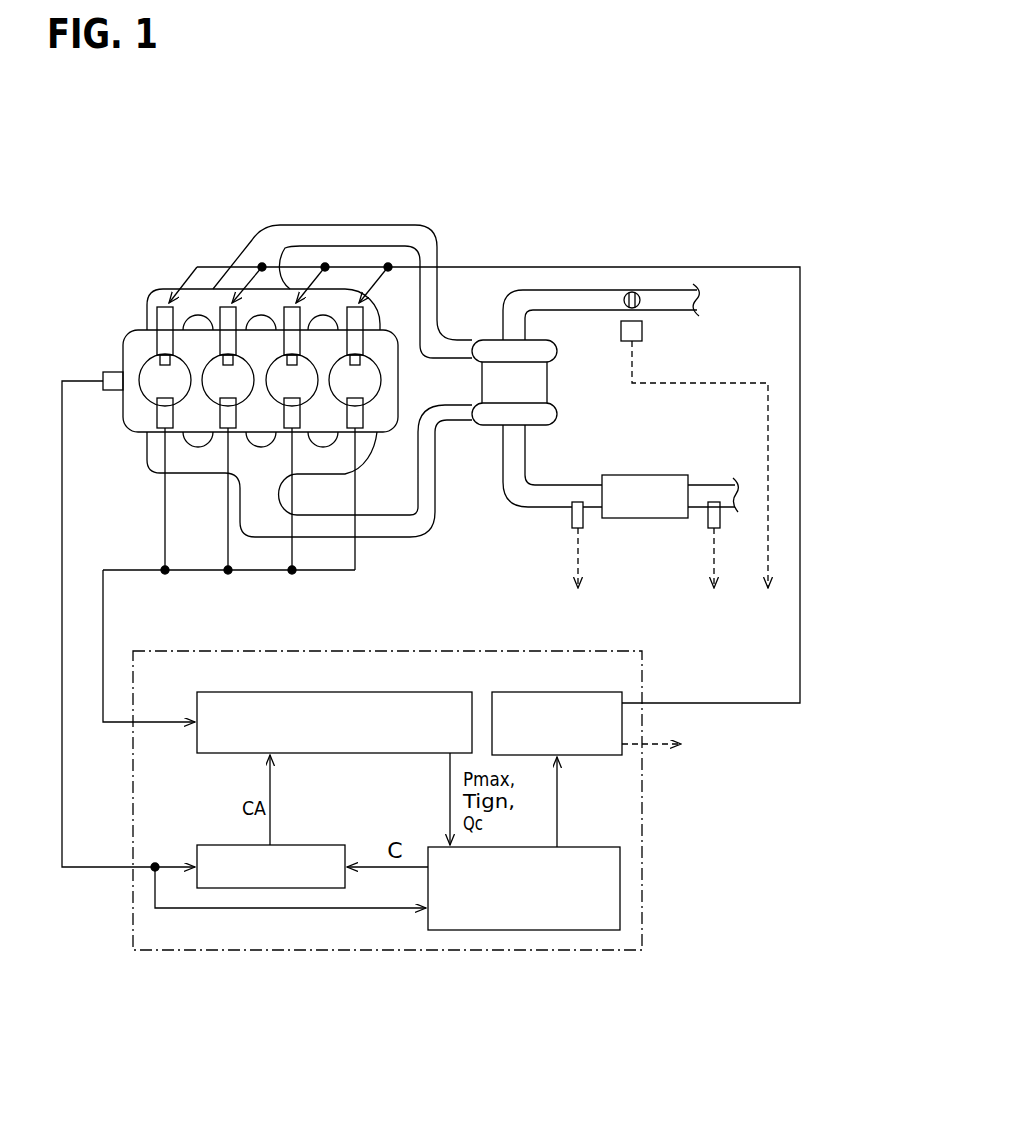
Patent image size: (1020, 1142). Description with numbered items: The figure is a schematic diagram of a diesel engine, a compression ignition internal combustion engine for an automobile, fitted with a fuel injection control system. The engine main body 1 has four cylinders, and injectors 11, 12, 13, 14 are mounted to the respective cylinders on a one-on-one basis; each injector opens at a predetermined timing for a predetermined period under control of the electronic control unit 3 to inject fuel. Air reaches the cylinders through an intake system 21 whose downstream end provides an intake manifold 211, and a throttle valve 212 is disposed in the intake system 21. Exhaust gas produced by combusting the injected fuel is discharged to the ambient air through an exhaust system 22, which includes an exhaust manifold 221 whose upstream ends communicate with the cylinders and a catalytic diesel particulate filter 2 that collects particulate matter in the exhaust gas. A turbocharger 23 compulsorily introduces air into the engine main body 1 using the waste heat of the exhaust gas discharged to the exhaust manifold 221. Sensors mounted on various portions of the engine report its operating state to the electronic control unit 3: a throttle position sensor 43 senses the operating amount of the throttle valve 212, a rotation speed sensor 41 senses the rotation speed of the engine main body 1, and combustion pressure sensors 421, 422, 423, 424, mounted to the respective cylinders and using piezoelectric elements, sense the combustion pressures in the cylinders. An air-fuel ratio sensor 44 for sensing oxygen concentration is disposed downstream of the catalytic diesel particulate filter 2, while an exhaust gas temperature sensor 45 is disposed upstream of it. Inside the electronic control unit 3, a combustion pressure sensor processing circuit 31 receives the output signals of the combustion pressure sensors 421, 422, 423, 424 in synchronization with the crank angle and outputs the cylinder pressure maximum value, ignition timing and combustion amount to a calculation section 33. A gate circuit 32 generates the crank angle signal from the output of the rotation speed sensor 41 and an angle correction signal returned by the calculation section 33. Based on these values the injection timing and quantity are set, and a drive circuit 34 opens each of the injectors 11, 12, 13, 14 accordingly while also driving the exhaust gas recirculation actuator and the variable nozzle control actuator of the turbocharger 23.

The engine main body 1 is at (123, 345).
The injector 11 is at (165, 306).
The injector 12 is at (228, 306).
The injector 13 is at (292, 306).
The injector 14 is at (355, 306).
The catalytic diesel particulate filter 2 is at (622, 475).
The intake system 21 is at (713, 314).
The intake manifold 211 is at (147, 305).
The throttle valve 212 is at (623, 300).
The exhaust system 22 is at (674, 448).
The exhaust manifold 221 is at (147, 452).
The turbocharger 23 is at (547, 380).
The electronic control unit 3 is at (642, 675).
The combustion pressure sensor processing circuit 31 is at (367, 692).
The gate circuit 32 is at (288, 845).
The calculation section 33 is at (578, 847).
The drive circuit 34 is at (557, 692).
The rotation speed sensor 41 is at (112, 372).
The throttle position sensor 43 is at (642, 328).
The air-fuel ratio sensor 44 is at (708, 528).
The exhaust gas temperature sensor 45 is at (572, 528).
The combustion pressure sensor 421 is at (160, 434).
The combustion pressure sensor 422 is at (222, 434).
The combustion pressure sensor 423 is at (300, 434).
The combustion pressure sensor 424 is at (360, 434).